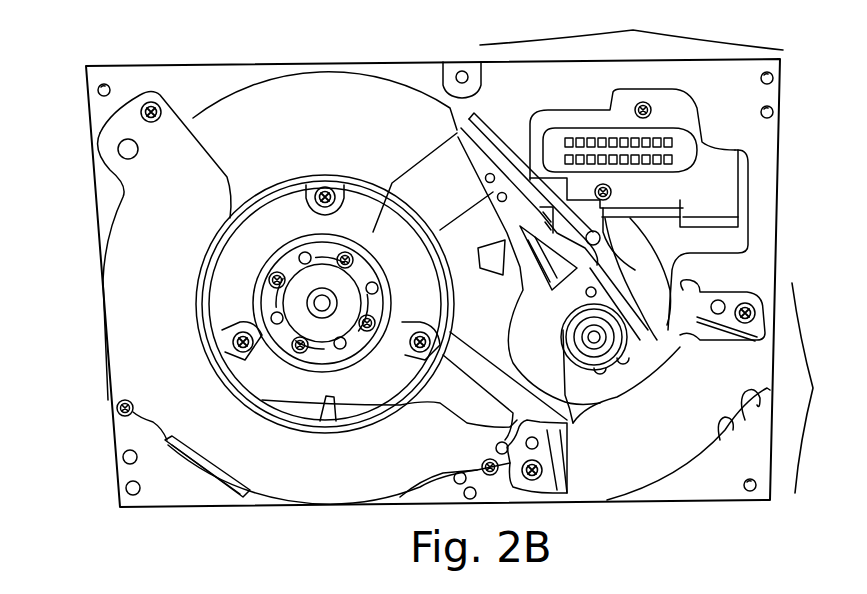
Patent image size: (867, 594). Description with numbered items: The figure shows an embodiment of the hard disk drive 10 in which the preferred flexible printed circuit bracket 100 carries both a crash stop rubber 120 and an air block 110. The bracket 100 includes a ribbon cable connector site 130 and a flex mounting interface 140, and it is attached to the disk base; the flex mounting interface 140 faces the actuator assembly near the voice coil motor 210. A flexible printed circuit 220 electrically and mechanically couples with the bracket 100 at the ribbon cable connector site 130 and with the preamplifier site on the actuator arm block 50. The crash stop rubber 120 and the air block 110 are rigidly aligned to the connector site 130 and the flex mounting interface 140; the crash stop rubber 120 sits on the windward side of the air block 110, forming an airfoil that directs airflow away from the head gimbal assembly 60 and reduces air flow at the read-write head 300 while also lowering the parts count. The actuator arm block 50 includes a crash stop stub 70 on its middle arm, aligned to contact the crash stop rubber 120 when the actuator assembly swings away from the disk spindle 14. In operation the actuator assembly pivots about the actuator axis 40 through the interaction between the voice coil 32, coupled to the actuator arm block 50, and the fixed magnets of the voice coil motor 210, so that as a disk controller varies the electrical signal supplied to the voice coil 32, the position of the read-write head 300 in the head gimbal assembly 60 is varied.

The hard disk drive 10 is at (80, 70).
The disk spindle 14 is at (323, 310).
The voice coil 32 is at (617, 393).
The actuator axis 40 is at (563, 372).
The actuator arm block 50 is at (505, 213).
The head gimbal assembly 60 is at (478, 165).
The crash stop stub 70 is at (620, 267).
The flexible printed circuit bracket 100 is at (631, 25).
The air block 110 is at (500, 140).
The crash stop rubber 120 is at (628, 225).
The ribbon cable connector site 130 is at (697, 140).
The flex mounting interface 140 is at (693, 215).
The voice coil motor 210 is at (829, 388).
The flexible printed circuit 220 is at (660, 242).
The read-write head 300 is at (457, 133).